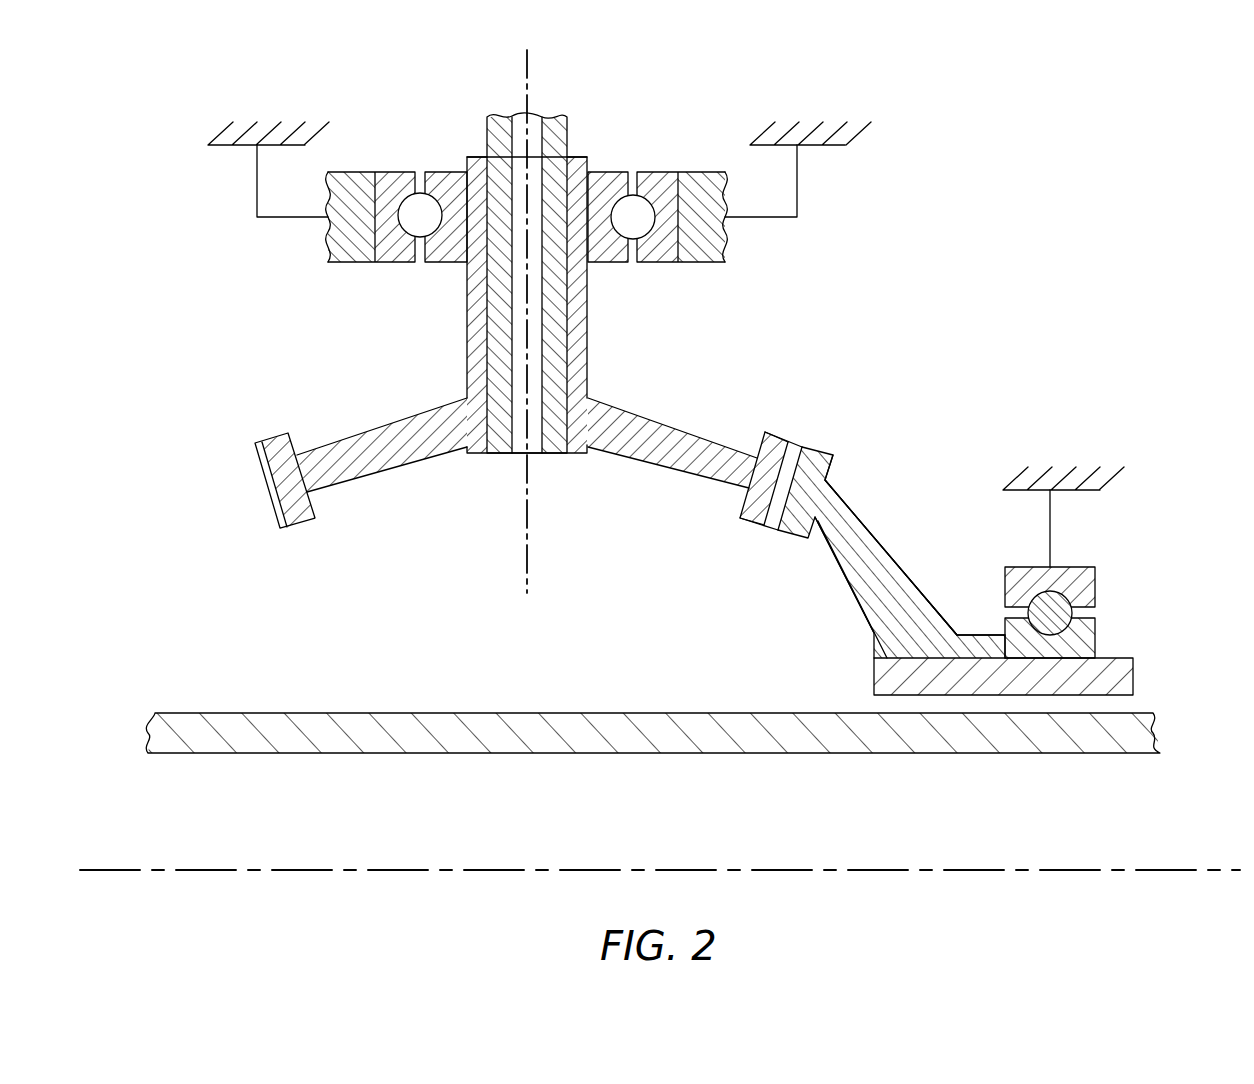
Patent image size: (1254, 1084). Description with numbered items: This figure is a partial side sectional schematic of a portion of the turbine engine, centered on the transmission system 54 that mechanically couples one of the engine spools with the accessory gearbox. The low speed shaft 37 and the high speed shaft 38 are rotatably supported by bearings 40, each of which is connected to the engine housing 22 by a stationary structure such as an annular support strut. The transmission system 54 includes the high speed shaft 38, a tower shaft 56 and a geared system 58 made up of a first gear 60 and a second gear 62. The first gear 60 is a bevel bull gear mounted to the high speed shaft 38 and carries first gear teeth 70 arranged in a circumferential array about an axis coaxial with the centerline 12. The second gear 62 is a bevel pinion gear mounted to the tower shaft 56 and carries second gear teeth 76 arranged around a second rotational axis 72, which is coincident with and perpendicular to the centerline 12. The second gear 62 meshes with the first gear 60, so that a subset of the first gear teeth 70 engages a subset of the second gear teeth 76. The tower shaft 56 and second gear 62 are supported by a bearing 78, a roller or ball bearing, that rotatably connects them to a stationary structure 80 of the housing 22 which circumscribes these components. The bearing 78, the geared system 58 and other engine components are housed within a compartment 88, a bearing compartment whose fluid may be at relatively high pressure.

The centerline 12 is at (1015, 870).
The engine housing 22 is at (271, 114).
The low speed shaft 37 is at (1133, 668).
The high speed shaft 38 is at (1160, 746).
The bearings 40 is at (1097, 586).
The transmission system 54 is at (952, 247).
The tower shaft 56 is at (568, 128).
The geared system 58 is at (820, 413).
The first gear 60 is at (899, 549).
The second gear 62 is at (647, 408).
The first gear teeth 70 is at (820, 447).
The second rotational axis 72 is at (527, 574).
The second gear teeth 76 is at (260, 443).
The bearing 78 is at (398, 165).
The stationary structure 80 is at (332, 248).
The compartment 88 is at (362, 360).